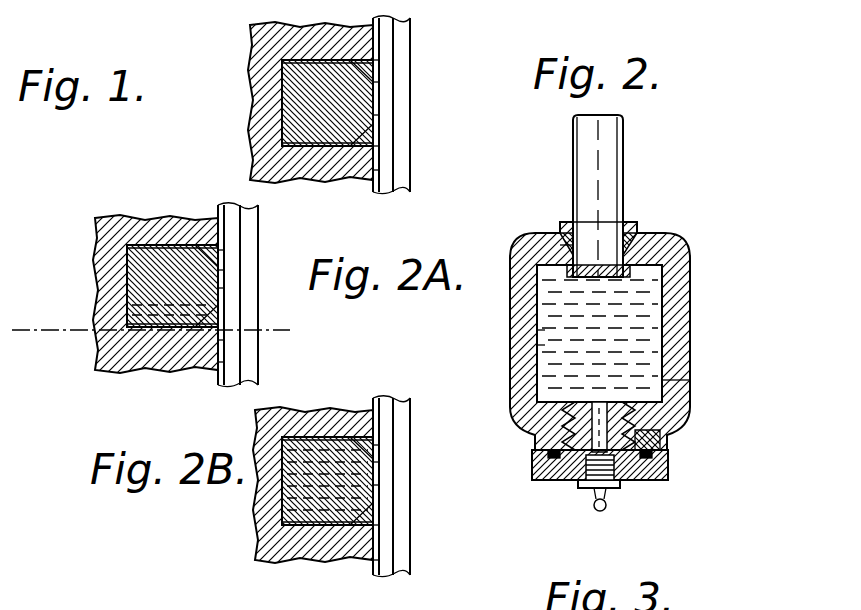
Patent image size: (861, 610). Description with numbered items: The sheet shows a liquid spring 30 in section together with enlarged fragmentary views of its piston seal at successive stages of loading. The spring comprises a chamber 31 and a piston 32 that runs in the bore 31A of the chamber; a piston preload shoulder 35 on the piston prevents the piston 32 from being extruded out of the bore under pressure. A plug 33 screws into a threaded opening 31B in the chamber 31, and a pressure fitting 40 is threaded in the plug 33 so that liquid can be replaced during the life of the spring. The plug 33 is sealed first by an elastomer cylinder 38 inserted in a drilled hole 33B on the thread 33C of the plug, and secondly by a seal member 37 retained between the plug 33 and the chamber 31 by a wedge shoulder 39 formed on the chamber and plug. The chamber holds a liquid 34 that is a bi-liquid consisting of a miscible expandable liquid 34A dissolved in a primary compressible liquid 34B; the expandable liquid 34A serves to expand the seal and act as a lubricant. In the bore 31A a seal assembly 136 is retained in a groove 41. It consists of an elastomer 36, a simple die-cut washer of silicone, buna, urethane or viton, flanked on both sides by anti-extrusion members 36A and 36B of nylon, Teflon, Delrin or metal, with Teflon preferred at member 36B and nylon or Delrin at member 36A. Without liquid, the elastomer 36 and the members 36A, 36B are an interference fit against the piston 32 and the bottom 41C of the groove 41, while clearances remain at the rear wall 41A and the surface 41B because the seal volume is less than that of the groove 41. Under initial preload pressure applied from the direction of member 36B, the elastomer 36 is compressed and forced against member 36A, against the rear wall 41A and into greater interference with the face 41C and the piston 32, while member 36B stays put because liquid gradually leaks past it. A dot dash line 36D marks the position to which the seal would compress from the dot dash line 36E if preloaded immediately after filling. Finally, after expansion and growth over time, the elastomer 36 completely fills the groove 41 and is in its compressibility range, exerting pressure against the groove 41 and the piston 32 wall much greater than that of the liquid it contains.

In FIG. 1, the liquid spring 30 is at (254, 84).
In FIG. 2A, the liquid spring 30 is at (94, 300).
In FIG. 2B, the liquid spring 30 is at (256, 531).
In FIG. 2, the liquid spring 30 is at (735, 245).
In FIG. 1, the chamber 31 is at (256, 31).
In FIG. 2A, the chamber 31 is at (101, 221).
In FIG. 2B, the chamber 31 is at (259, 425).
In FIG. 2, the chamber 31 is at (686, 353).
In FIG. 1, the bore 31A is at (380, 169).
In FIG. 2A, the bore 31A is at (226, 362).
In FIG. 2B, the bore 31A is at (380, 560).
In FIG. 2, the bore 31A is at (619, 228).
In FIG. 2, the threaded opening 31B is at (662, 383).
In FIG. 1, the piston 32 is at (412, 25).
In FIG. 2A, the piston 32 is at (260, 218).
In FIG. 2B, the piston 32 is at (412, 401).
In FIG. 2, the piston 32 is at (625, 140).
In FIG. 2, the plug 33 is at (668, 481).
In FIG. 2, the drilled hole 33B is at (655, 452).
In FIG. 2, the thread 33C is at (538, 433).
In FIG. 2, the liquid 34 is at (642, 314).
In FIG. 2A, the miscible expandable liquid 34A is at (226, 318).
In FIG. 2B, the miscible expandable liquid 34A is at (380, 505).
In FIG. 2, the miscible expandable liquid 34A is at (545, 330).
In FIG. 2, the primary compressible liquid 34B is at (545, 345).
In FIG. 2, the piston preload shoulder 35 is at (540, 271).
In FIG. 1, the elastomer 36 is at (380, 116).
In FIG. 2A, the elastomer 36 is at (226, 271).
In FIG. 2B, the elastomer 36 is at (380, 485).
In FIG. 1, the anti-extrusion member 36A is at (380, 62).
In FIG. 2A, the anti-extrusion member 36A is at (226, 251).
In FIG. 2B, the anti-extrusion member 36A is at (380, 446).
In FIG. 1, the anti-extrusion member 36B is at (380, 145).
In FIG. 2A, the anti-extrusion member 36B is at (226, 341).
In FIG. 2B, the anti-extrusion member 36B is at (380, 528).
In FIG. 2A, the dot dash line 36D is at (305, 331).
In FIG. 2A, the dot dash line 36E is at (28, 336).
In FIG. 1, the seal assembly 136 is at (381, 82).
In FIG. 2A, the seal assembly 136 is at (228, 288).
In FIG. 2B, the seal assembly 136 is at (381, 462).
In FIG. 2, the seal assembly 136 is at (561, 246).
In FIG. 2, the seal member 37 is at (642, 485).
In FIG. 2, the elastomer cylinder 38 is at (684, 433).
In FIG. 2, the wedge shoulder 39 is at (670, 461).
In FIG. 2, the pressure fitting 40 is at (591, 510).
In FIG. 1, the groove 41 is at (286, 92).
In FIG. 2A, the groove 41 is at (203, 244).
In FIG. 2B, the groove 41 is at (355, 436).
In FIG. 2, the groove 41 is at (637, 242).
In FIG. 1, the rear wall of groove 41A is at (327, 59).
In FIG. 2A, the rear wall of groove 41A is at (177, 222).
In FIG. 2B, the rear wall of groove 41A is at (317, 436).
In FIG. 1, the surface of groove 41B is at (321, 178).
In FIG. 2A, the surface of groove 41B is at (179, 371).
In FIG. 2B, the surface of groove 41B is at (302, 558).
In FIG. 1, the bottom of seal groove 41C is at (263, 64).
In FIG. 2A, the bottom of seal groove 41C is at (134, 277).
In FIG. 2B, the bottom of seal groove 41C is at (282, 500).